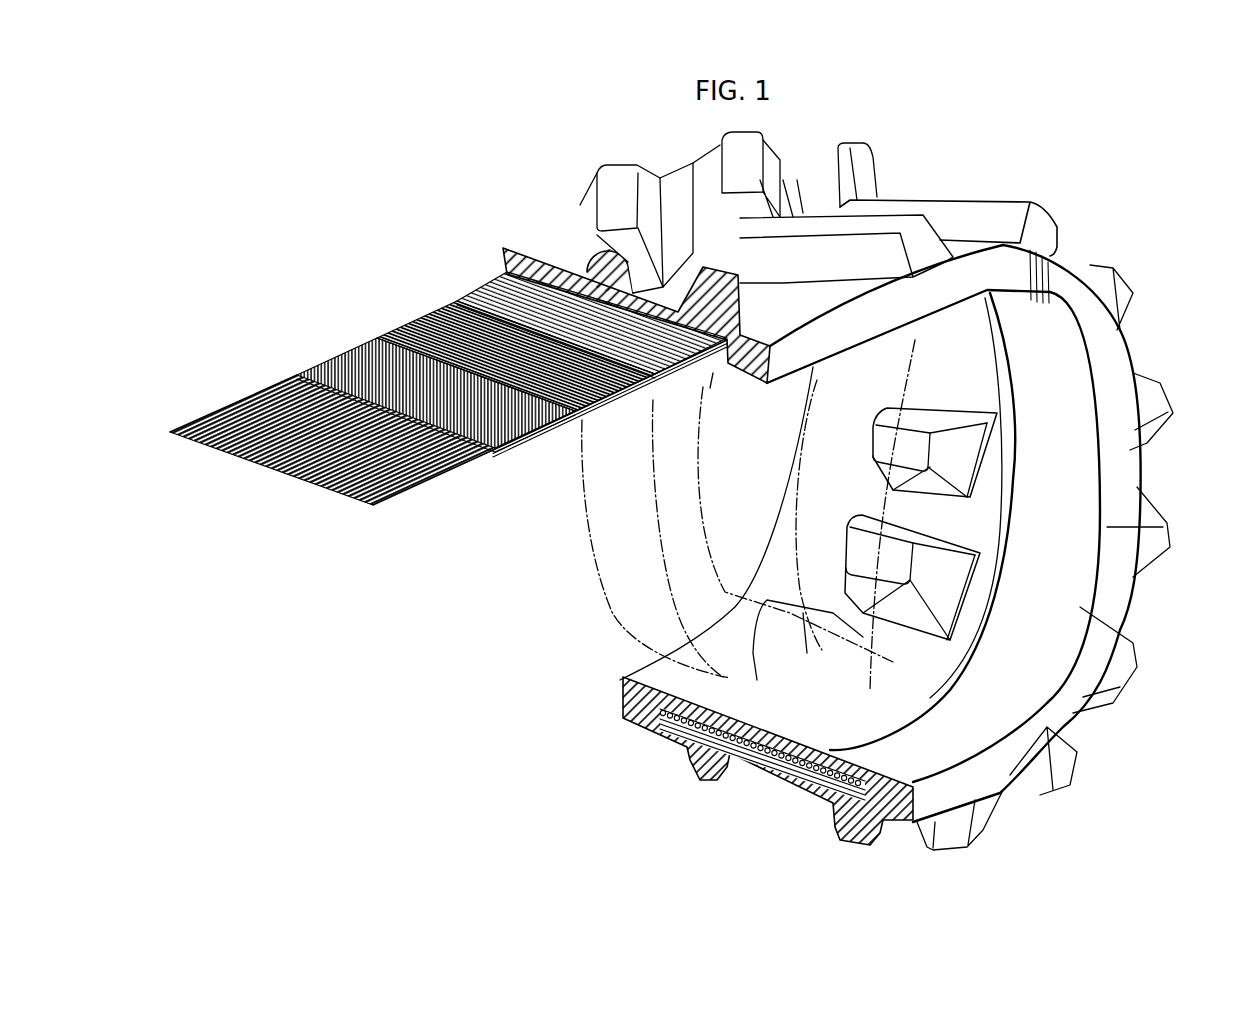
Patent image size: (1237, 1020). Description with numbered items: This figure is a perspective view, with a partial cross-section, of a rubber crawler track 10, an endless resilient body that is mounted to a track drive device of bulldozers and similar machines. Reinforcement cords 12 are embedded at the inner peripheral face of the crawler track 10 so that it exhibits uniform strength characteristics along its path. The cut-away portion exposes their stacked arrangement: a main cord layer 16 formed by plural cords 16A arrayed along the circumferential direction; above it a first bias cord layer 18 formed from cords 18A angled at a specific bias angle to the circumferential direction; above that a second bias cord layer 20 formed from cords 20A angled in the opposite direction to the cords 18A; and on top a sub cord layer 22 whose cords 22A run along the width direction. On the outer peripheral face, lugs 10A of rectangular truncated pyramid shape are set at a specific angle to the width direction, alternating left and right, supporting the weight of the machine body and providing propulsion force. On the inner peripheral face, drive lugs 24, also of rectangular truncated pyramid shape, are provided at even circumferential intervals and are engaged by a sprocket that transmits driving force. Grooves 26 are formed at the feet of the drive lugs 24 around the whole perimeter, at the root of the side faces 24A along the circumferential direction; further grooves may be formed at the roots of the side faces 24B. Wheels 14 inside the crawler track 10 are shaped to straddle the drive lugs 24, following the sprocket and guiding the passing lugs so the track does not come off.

The crawler track 10 is at (1107, 596).
The lugs 10A is at (740, 253).
The reinforcement cords 12 is at (343, 335).
The wheels 14 is at (600, 590).
The main cord layer 16 is at (386, 488).
The cords 16A is at (262, 459).
The first bias cord layer 18 is at (513, 436).
The cords 18A is at (492, 447).
The second bias cord layer 20 is at (457, 318).
The cords 20A is at (420, 330).
The sub cord layer 22 is at (504, 251).
The cords 22A is at (500, 298).
The drive lugs 24 is at (1012, 457).
The side faces 24A is at (967, 570).
The side faces 24B is at (928, 487).
The grooves 26 is at (778, 773).